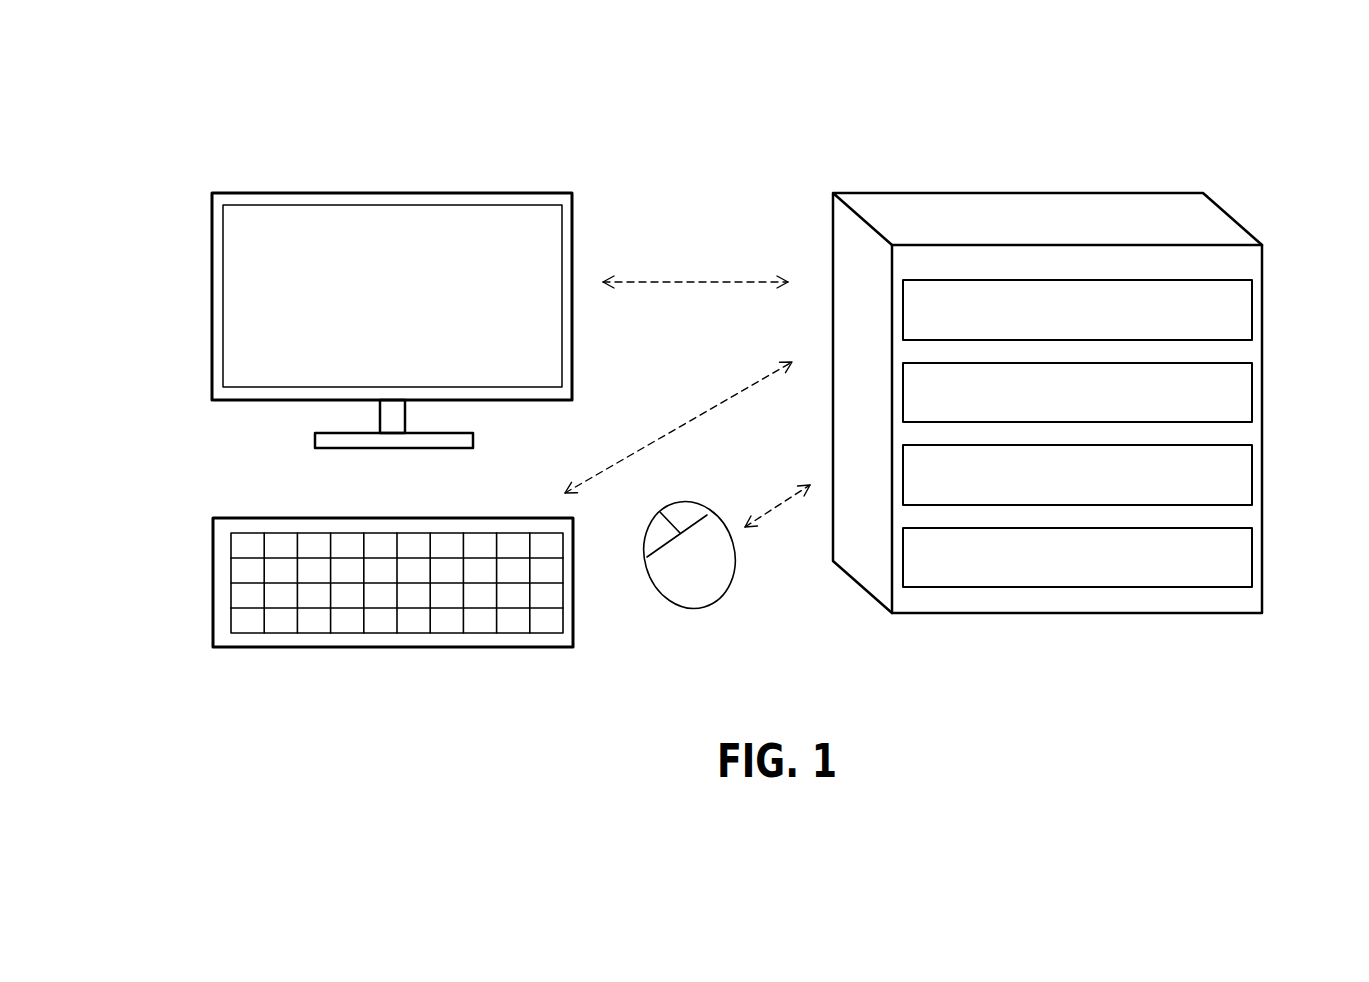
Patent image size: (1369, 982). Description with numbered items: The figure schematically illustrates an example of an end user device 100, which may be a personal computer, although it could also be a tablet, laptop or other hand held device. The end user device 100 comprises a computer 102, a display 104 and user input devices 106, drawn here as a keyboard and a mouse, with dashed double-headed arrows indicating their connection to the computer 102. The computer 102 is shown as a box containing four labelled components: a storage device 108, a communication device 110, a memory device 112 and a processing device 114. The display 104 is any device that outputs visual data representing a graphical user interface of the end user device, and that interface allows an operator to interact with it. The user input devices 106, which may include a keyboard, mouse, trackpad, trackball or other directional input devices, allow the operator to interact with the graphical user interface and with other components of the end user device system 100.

The end user device 100 is at (428, 309).
The computer 102 is at (1026, 210).
The display 104 is at (373, 196).
The user input devices 106 is at (475, 637).
The storage device 108 is at (1252, 310).
The communication device 110 is at (1252, 397).
The memory device 112 is at (1252, 467).
The processing device 114 is at (1252, 555).